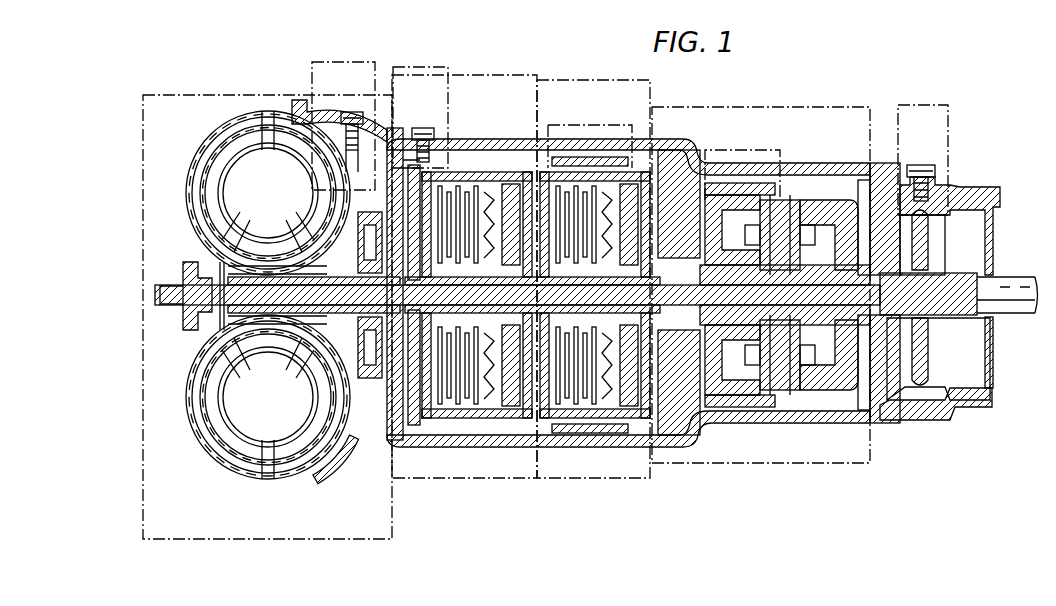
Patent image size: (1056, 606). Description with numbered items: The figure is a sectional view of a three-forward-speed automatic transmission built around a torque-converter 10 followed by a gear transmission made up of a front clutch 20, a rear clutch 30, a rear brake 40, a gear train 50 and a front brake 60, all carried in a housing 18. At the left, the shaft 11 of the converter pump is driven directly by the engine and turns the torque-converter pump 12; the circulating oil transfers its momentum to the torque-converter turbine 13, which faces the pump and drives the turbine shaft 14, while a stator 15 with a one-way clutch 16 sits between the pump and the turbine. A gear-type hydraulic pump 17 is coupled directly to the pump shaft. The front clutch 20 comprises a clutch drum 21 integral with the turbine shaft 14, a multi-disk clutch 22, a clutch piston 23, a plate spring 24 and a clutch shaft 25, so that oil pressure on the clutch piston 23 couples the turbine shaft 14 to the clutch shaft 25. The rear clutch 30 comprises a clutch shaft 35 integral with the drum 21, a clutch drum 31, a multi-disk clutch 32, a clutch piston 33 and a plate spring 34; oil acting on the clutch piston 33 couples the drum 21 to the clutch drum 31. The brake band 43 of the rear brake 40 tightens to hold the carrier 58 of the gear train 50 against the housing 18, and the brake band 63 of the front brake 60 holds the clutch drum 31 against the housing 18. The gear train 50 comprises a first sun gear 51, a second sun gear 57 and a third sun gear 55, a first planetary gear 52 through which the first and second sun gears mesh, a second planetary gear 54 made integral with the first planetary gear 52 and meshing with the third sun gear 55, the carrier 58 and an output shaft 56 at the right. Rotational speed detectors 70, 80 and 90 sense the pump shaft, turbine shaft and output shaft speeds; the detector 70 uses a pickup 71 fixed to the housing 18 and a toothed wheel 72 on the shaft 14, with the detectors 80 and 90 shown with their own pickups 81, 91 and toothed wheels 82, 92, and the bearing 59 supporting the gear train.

The torque-converter 10 is at (215, 93).
The converter pump shaft 11 is at (186, 288).
The torque-converter pump 12 is at (303, 470).
The torque-converter turbine 13 is at (262, 466).
The turbine shaft 14 is at (184, 322).
The stator 15 is at (272, 352).
The one-way clutch 16 is at (222, 346).
The hydraulic pump 17 is at (366, 366).
The housing 18 is at (340, 480).
The front clutch 20 is at (520, 77).
The clutch drum 21 is at (428, 447).
The multi-disk clutch 22 is at (440, 420).
The clutch piston 23 is at (472, 420).
The plate spring 24 is at (490, 447).
The clutch shaft 25 is at (511, 200).
The rear clutch 30 is at (605, 81).
The clutch drum 31 is at (562, 447).
The multi-disk clutch 32 is at (560, 420).
The clutch piston 33 is at (610, 420).
The plate spring 34 is at (615, 447).
The clutch shaft 35 is at (650, 455).
The rear brake 40 is at (735, 152).
The brake band 43 is at (752, 183).
The gear train 50 is at (712, 106).
The first sun gear 51 is at (864, 446).
The first planetary gear 52 is at (790, 400).
The second planetary gear 54 is at (815, 395).
The third sun gear 55 is at (875, 422).
The output shaft 56 is at (952, 318).
The second sun gear 57 is at (778, 400).
The carrier 58 is at (722, 400).
The bearing 59 is at (705, 412).
The front brake 60 is at (572, 130).
The brake band 63 is at (598, 157).
The rotational speed detector 70 is at (340, 63).
The pickup 71 is at (357, 111).
The toothed wheel 72 is at (352, 174).
The rotational speed detector 80 is at (450, 68).
The bolt 81 is at (428, 127).
The passage 82 is at (432, 162).
The rotational speed detector 90 is at (935, 106).
The bolt 91 is at (937, 173).
The passage 92 is at (930, 240).